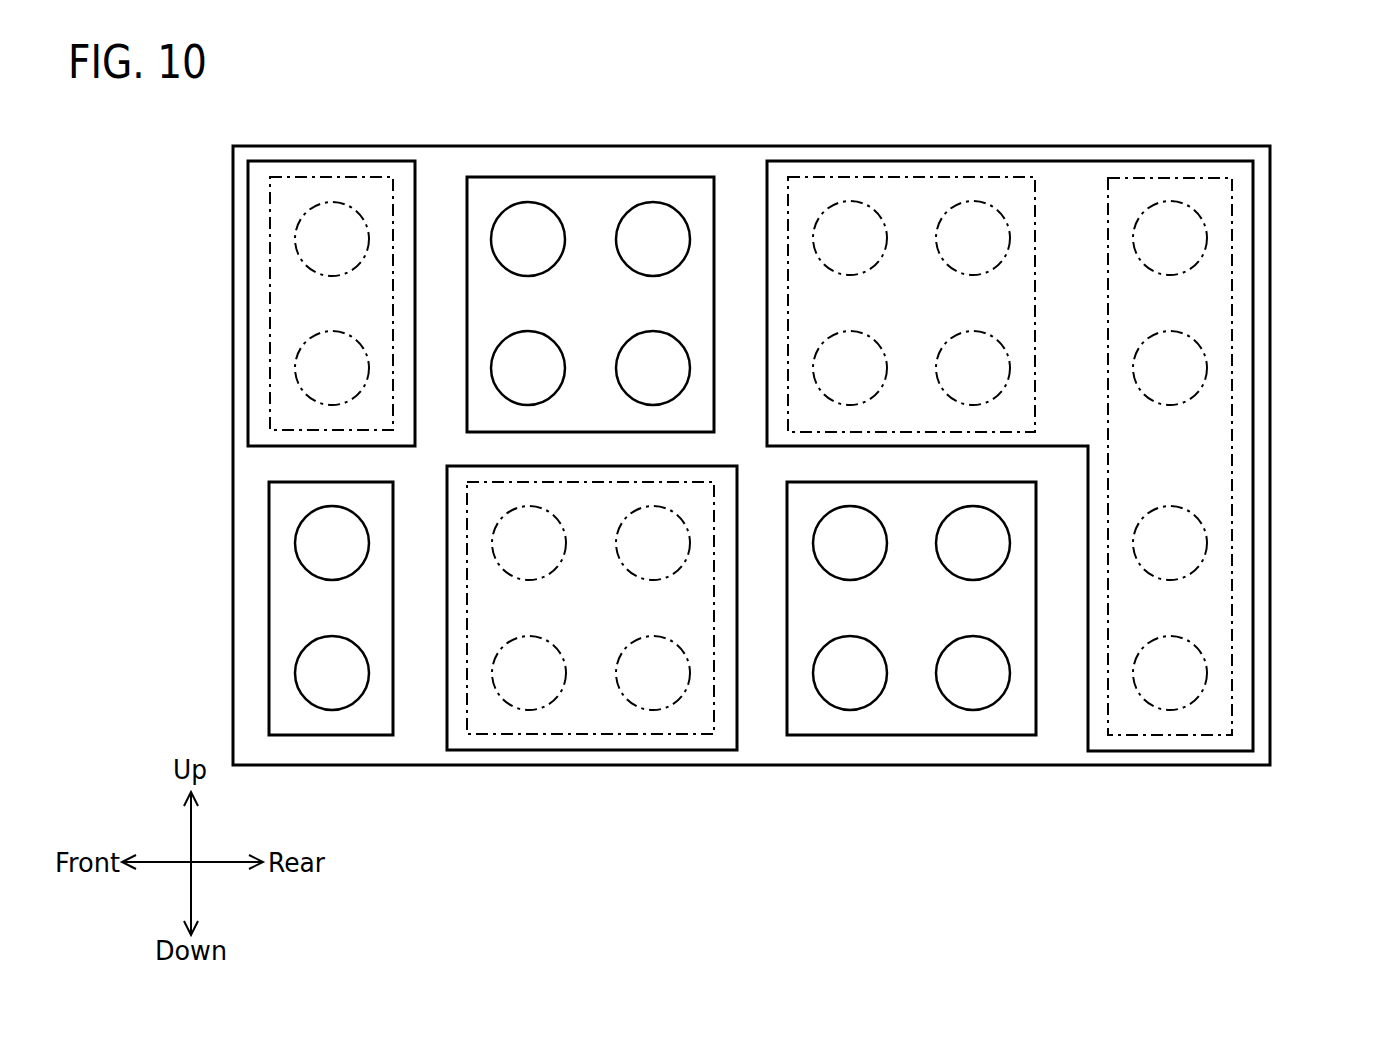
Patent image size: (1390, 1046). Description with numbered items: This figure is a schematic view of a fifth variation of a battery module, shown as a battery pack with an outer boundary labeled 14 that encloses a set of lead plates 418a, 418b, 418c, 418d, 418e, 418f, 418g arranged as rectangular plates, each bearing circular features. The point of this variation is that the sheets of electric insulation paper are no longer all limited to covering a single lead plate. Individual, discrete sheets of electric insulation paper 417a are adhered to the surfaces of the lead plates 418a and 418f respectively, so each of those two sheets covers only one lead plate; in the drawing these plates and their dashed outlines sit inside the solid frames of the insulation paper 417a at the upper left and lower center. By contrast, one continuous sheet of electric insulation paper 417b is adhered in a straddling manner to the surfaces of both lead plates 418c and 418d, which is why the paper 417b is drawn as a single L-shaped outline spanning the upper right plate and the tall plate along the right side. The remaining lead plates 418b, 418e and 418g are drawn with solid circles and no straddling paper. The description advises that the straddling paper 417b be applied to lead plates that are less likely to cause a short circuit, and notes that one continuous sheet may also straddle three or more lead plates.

The cover plate 14 is at (442, 160).
The electric insulation paper 417a is at (290, 168).
The electric insulation paper 417b is at (1243, 317).
The lead plate 418a is at (330, 190).
The lead plate 418b is at (573, 192).
The lead plate 418c is at (915, 205).
The lead plate 418d is at (1172, 190).
The lead plate 418e is at (894, 722).
The lead plate 418f is at (608, 722).
The lead plate 418g is at (328, 722).